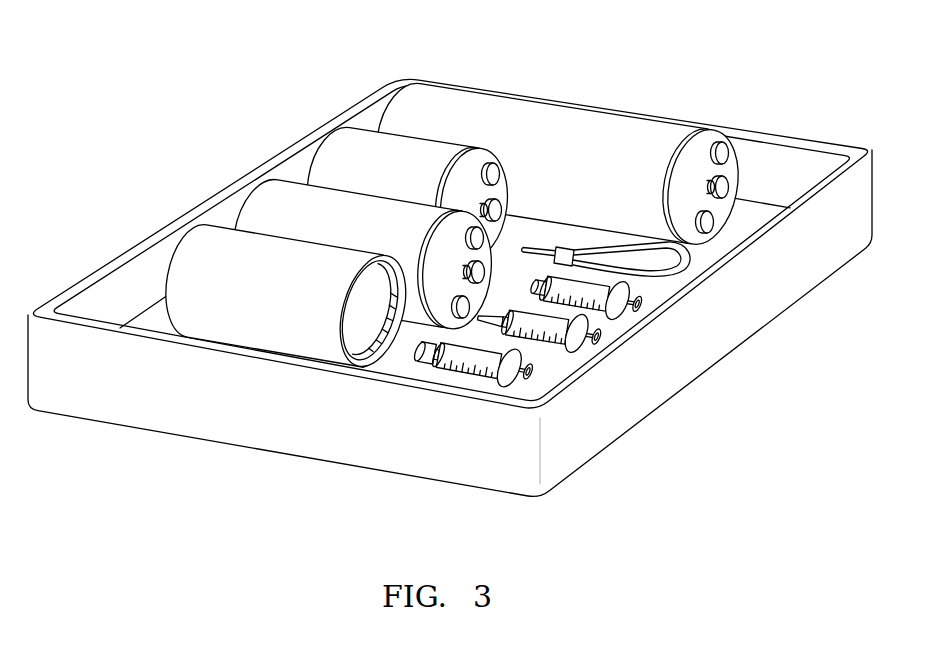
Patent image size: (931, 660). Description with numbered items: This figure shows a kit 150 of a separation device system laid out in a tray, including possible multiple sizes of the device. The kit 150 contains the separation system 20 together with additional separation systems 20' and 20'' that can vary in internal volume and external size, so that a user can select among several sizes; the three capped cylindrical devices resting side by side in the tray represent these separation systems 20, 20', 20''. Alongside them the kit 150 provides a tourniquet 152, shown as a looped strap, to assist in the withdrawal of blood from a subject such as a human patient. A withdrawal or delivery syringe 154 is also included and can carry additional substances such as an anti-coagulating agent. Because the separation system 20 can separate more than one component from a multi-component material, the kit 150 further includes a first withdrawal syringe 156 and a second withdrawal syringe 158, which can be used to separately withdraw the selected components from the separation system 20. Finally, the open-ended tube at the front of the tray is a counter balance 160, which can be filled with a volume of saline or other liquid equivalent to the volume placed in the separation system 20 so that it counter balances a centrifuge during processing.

The separation system 20 is at (340, 240).
The separation system 20' is at (530, 153).
The separation system 20'' is at (380, 184).
The kit 150 is at (728, 92).
The tourniquet 152 is at (635, 246).
The syringe 154 is at (615, 327).
The first withdrawal syringe 156 is at (577, 363).
The second withdrawal syringe 158 is at (507, 393).
The counter balance 160 is at (232, 223).